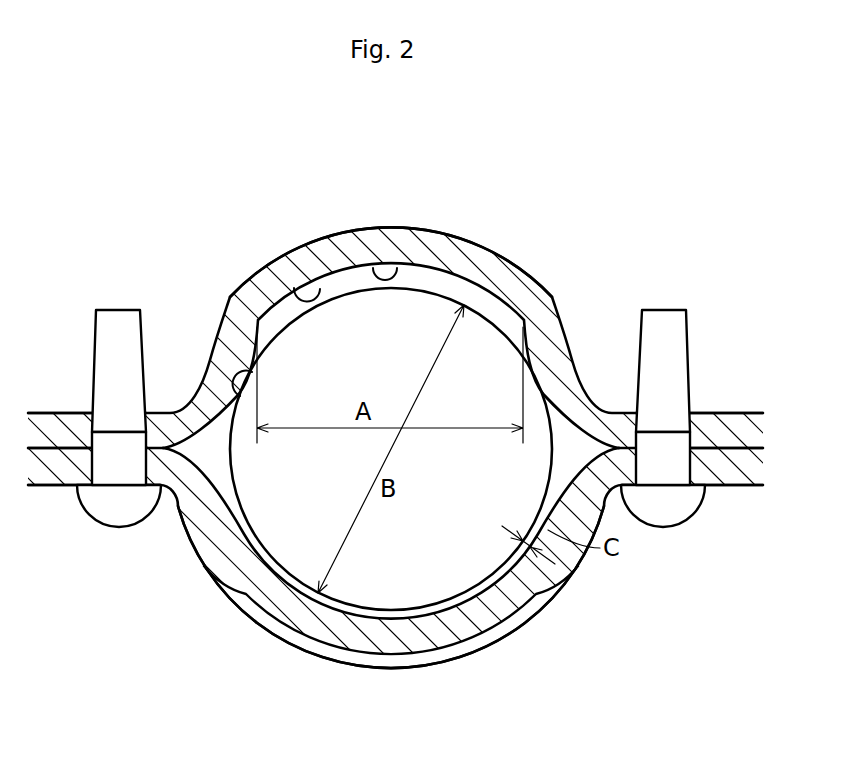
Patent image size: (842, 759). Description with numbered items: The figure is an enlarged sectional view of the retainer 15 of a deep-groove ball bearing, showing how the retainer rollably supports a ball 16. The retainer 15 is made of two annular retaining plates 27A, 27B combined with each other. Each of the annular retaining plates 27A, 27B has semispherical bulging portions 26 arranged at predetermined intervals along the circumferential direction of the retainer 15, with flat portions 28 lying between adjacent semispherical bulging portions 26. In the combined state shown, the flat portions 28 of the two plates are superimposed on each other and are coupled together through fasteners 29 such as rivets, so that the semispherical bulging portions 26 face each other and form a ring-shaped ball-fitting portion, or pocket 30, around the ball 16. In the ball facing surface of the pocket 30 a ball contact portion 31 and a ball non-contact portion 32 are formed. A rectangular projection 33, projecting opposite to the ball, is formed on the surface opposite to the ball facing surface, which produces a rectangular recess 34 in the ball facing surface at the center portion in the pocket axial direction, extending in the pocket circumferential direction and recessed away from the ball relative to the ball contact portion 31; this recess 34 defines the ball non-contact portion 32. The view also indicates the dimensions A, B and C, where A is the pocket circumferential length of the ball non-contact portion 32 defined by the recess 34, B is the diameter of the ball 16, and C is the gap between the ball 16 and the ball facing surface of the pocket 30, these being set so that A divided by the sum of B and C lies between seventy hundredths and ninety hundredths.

The retainer 15 is at (421, 435).
The ball 16 is at (415, 301).
The semispherical bulging portion 26 is at (570, 323).
The annular retaining plate 27A is at (743, 398).
The annular retaining plate 27B is at (724, 478).
The flat portion 28 is at (55, 410).
The fastener 29 is at (107, 513).
The ball-fitting portion (pocket) 30 is at (268, 549).
The ball contact portion 31 is at (248, 372).
The ball non-contact portion 32 is at (395, 268).
The rectangular projection 33 is at (358, 228).
The rectangular recess 34 is at (316, 288).